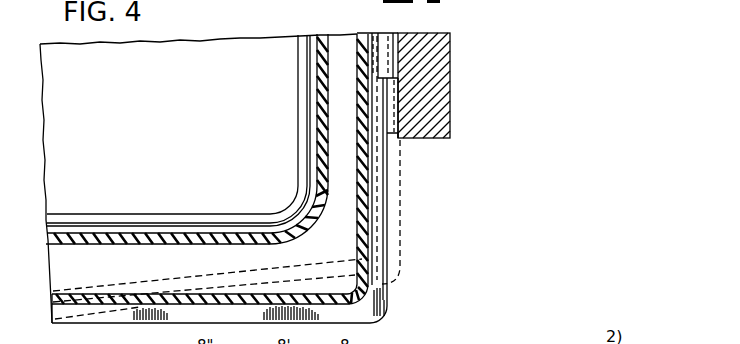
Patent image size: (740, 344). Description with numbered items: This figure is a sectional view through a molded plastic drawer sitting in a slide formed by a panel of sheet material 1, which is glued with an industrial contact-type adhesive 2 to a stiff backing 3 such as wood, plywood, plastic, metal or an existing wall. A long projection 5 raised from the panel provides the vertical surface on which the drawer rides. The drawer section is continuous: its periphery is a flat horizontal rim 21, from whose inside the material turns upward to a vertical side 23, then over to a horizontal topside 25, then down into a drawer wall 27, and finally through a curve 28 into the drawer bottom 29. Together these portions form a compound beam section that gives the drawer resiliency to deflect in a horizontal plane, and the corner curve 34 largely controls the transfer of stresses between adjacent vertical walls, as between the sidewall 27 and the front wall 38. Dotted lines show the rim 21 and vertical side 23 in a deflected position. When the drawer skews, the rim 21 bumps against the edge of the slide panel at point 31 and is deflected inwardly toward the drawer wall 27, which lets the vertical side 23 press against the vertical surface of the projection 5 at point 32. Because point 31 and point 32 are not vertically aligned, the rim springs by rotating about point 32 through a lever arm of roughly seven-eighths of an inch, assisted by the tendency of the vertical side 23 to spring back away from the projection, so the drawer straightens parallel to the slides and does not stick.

The panel of sheet material 1 is at (369, 31).
The industrial contact-type adhesive 2 is at (398, 110).
The stiff backing 3 is at (447, 50).
The long projection 5 is at (364, 49).
The flat horizontal rim 21 is at (405, 231).
The vertical side 23 is at (383, 214).
The horizontal topside 25 is at (332, 209).
The drawer wall 27 is at (327, 130).
The curve 28 is at (297, 213).
The drawer bottom 29 is at (157, 117).
The point 31 is at (393, 134).
The point 32 is at (382, 78).
The corner curve 34 is at (307, 227).
The front wall 38 is at (189, 240).